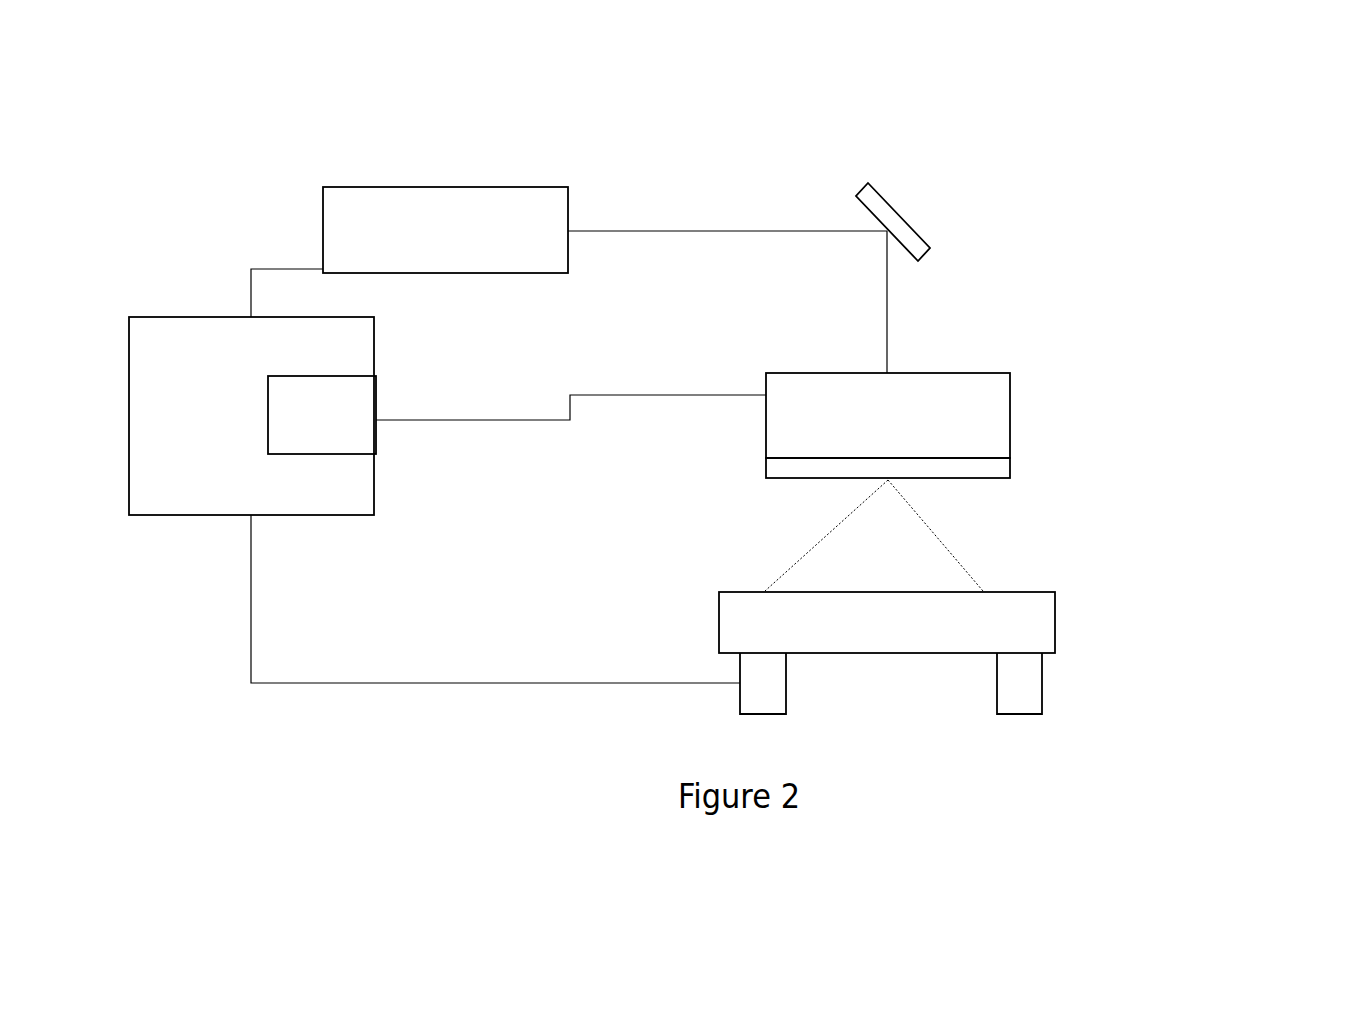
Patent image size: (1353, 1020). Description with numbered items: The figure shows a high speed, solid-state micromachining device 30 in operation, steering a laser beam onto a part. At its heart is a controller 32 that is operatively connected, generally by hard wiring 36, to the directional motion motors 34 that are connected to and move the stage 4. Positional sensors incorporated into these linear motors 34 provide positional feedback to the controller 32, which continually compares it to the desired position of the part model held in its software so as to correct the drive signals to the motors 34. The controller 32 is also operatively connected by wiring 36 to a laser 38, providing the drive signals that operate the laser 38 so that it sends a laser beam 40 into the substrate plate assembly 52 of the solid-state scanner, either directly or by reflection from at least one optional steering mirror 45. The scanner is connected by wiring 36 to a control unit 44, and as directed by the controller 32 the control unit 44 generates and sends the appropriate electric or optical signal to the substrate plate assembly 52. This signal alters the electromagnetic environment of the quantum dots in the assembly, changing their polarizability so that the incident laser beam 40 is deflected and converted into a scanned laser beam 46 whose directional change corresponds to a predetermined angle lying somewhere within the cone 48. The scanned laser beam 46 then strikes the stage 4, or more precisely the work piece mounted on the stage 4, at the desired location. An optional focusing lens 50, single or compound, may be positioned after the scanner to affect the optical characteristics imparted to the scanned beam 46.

The solid state micromachining device 30 is at (1104, 181).
The controller 32 is at (197, 522).
The directional motion motors 34 is at (1020, 687).
The hard wiring 36 is at (273, 268).
The laser 38 is at (375, 187).
The laser beam 40 is at (668, 231).
The control unit 44 is at (348, 408).
The steering mirror 45 is at (890, 205).
The scanned laser beam 46 is at (803, 553).
The cone 48 is at (930, 555).
The focusing lens 50 is at (997, 475).
The substrate plate assembly 52 is at (997, 421).
The stage 4 is at (1042, 613).